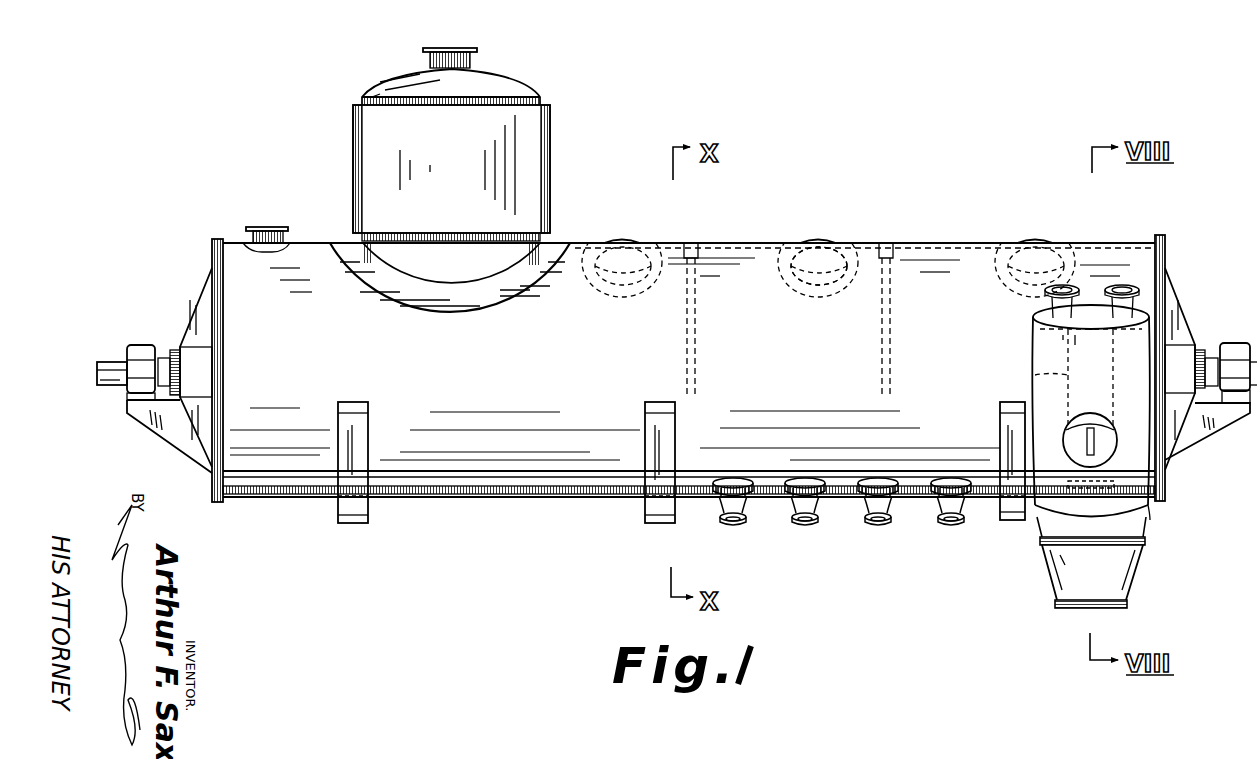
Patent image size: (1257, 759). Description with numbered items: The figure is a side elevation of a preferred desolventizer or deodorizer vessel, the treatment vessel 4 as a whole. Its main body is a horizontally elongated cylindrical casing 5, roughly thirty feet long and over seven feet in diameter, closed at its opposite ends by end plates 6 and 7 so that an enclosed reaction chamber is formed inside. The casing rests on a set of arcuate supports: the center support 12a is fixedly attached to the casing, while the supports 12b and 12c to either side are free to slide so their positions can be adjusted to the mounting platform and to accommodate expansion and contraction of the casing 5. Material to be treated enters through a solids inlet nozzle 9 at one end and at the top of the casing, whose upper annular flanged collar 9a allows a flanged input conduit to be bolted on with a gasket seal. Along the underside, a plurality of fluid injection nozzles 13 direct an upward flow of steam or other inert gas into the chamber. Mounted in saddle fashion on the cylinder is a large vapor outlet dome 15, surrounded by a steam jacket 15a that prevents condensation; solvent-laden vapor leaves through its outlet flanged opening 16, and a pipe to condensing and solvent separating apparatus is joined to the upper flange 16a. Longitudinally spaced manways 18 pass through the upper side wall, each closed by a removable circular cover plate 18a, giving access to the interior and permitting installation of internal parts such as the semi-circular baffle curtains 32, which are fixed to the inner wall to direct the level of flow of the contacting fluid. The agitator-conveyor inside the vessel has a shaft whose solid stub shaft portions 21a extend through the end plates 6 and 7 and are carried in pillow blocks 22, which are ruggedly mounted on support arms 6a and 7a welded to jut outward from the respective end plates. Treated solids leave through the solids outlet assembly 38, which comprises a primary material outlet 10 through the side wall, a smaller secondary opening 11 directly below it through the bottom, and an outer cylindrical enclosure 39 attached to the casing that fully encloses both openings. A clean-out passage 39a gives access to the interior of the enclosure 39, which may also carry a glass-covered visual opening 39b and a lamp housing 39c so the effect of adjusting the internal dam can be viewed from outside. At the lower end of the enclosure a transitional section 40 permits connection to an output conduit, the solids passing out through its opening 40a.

The treatment vessel 4 is at (497, 505).
The cylindrical casing 5 is at (292, 500).
The end plate 6 is at (212, 255).
The support arm 6a is at (162, 438).
The end plate 7 is at (1165, 258).
The support arm 7a is at (1205, 442).
The solids inlet nozzle 9 is at (288, 240).
The flanged collar 9a is at (246, 228).
The primary material outlet 10 is at (1035, 378).
The secondary opening 11 is at (1078, 484).
The center support 12a is at (640, 505).
The support 12b is at (368, 505).
The support 12c is at (1000, 505).
The fluid injection nozzles 13 is at (805, 526).
The vapor outlet dome 15 is at (353, 140).
The steam jacket 15a is at (550, 160).
The outlet flanged opening 16 is at (430, 62).
The upper flange 16a is at (470, 54).
The manways 18 is at (600, 292).
The cover plate 18a is at (792, 272).
The stub shaft 21a is at (108, 392).
The pillow blocks 22 is at (140, 345).
The baffle curtains 32 is at (696, 366).
The solids outlet assembly 38 is at (1035, 365).
The cylindrical enclosure 39 is at (1150, 508).
The clean-out passage 39a is at (1117, 442).
The visual opening 39b is at (1045, 296).
The lamp housing 39c is at (1130, 243).
The transitional section 40 is at (1048, 572).
The opening 40a is at (1060, 606).